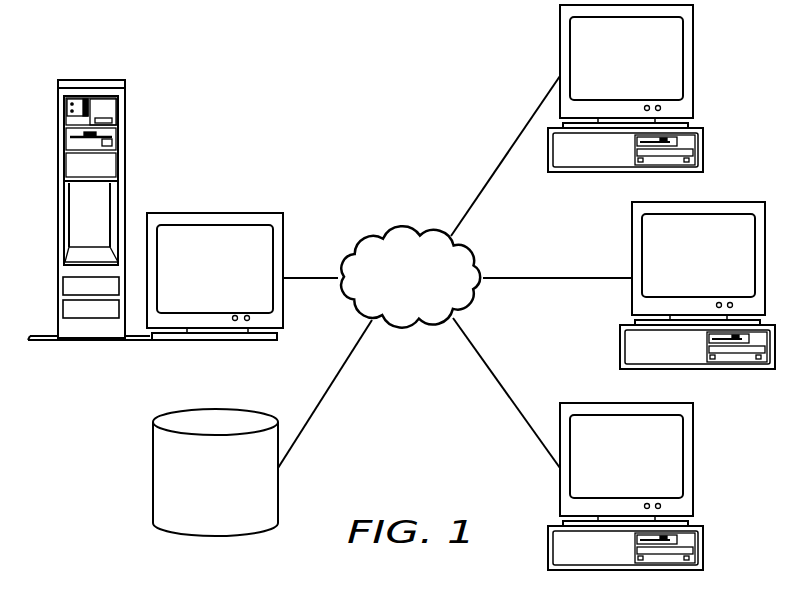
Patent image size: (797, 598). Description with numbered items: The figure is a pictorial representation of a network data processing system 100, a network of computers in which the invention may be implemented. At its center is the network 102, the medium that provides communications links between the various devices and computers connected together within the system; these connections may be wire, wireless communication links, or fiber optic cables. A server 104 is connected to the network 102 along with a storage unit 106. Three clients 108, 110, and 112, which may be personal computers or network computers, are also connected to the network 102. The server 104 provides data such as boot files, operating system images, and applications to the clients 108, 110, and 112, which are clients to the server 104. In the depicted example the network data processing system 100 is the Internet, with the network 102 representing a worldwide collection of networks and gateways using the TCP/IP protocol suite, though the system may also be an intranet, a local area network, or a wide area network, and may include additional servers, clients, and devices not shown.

The network data processing system 100 is at (313, 75).
The network 102 is at (430, 306).
The server 104 is at (193, 280).
The storage unit 106 is at (195, 494).
The client 108 is at (647, 72).
The client 110 is at (697, 298).
The client 112 is at (625, 499).